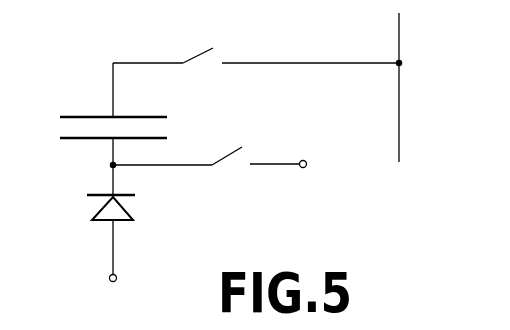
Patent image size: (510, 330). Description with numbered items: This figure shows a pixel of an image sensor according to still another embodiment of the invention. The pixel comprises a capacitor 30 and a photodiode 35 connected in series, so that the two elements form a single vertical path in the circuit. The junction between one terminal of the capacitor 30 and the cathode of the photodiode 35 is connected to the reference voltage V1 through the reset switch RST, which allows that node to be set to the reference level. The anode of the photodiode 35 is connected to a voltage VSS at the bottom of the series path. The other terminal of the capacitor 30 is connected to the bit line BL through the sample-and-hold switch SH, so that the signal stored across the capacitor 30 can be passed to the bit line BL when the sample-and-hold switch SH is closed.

The capacitor 30 is at (103, 110).
The photodiode 35 is at (103, 222).
The sample-and-hold switch SH is at (291, 43).
The reset switch RST is at (255, 142).
The bit line BL is at (421, 87).
The reference voltage V1 is at (304, 181).
The voltage VSS is at (116, 293).